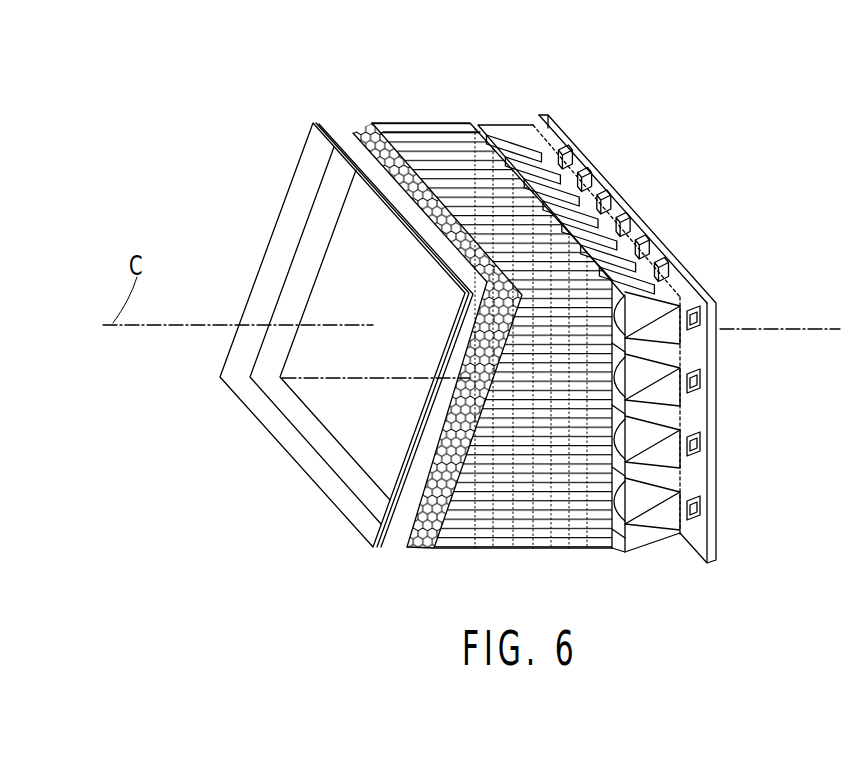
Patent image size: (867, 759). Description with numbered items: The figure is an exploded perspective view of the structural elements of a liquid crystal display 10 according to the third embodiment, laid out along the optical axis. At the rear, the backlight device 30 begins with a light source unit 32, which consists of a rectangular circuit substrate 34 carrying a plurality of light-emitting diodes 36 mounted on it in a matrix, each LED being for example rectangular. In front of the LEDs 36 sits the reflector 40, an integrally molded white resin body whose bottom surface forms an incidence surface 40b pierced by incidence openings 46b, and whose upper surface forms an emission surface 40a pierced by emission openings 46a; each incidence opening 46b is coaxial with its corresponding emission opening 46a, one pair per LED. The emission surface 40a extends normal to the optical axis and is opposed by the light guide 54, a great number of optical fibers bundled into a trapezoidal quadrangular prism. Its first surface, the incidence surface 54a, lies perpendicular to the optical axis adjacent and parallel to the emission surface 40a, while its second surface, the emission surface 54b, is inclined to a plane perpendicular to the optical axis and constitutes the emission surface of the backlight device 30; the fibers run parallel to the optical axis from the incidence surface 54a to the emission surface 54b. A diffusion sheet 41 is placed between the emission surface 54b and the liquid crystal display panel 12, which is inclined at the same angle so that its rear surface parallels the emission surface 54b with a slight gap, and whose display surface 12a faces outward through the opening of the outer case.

The liquid crystal display 10 is at (366, 70).
The liquid crystal display panel 12 is at (317, 335).
The display surface 12a is at (232, 353).
The backlight device 30 is at (491, 321).
The light source unit 32 is at (636, 339).
The circuit substrate 34 is at (670, 278).
The light-emitting diodes 36 is at (618, 203).
The reflector 40 is at (636, 329).
The emission surface 40a is at (632, 549).
The incidence surface 40b is at (687, 398).
The diffusion sheet 41 is at (348, 132).
The emission openings 46a is at (673, 298).
The incidence openings 46b is at (683, 470).
The light guide 54 is at (503, 530).
The incidence surface 54a is at (613, 556).
The emission surface 54b is at (420, 547).